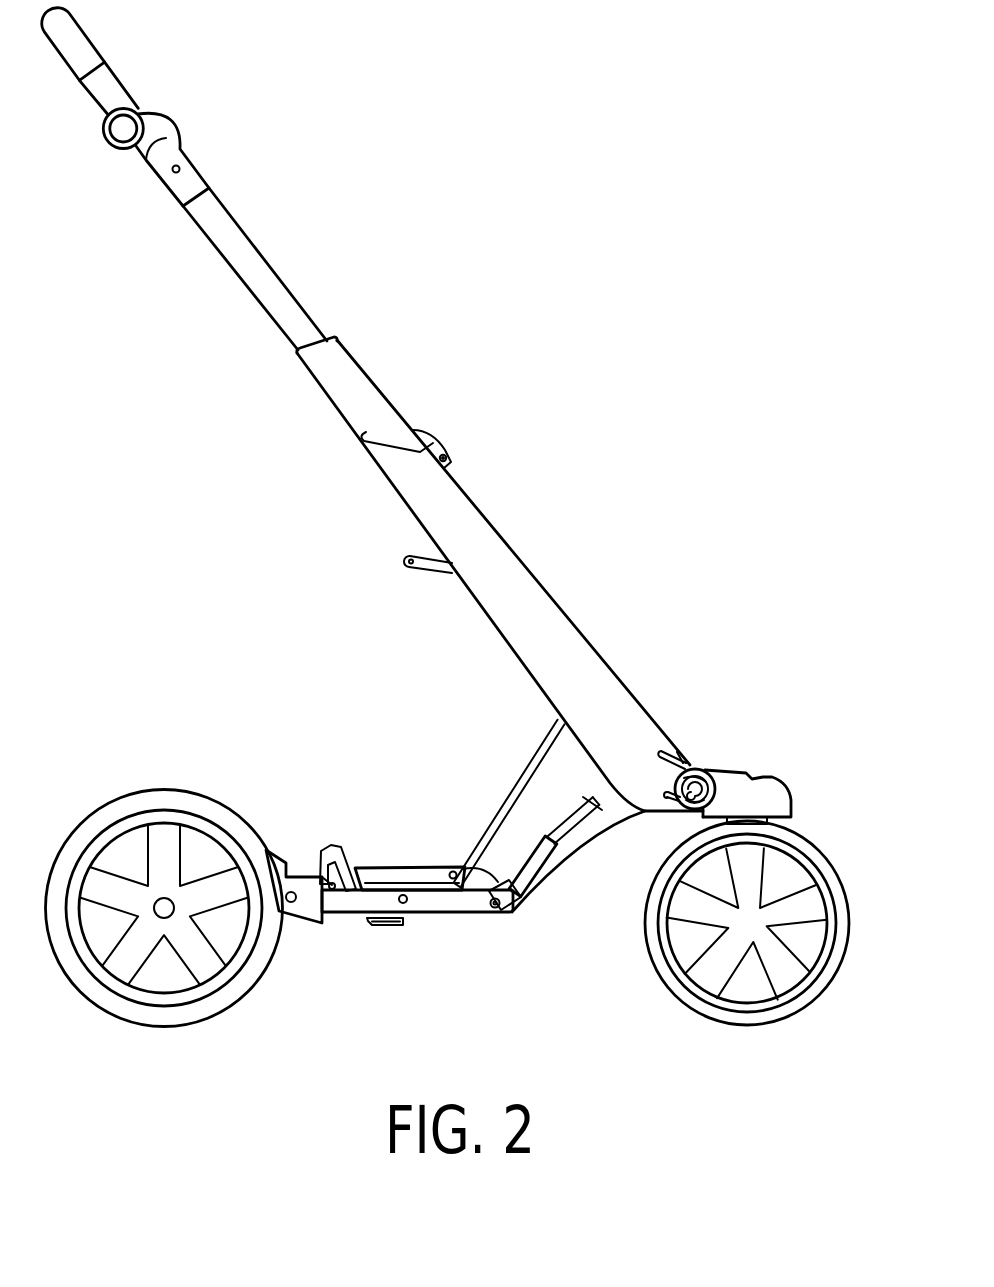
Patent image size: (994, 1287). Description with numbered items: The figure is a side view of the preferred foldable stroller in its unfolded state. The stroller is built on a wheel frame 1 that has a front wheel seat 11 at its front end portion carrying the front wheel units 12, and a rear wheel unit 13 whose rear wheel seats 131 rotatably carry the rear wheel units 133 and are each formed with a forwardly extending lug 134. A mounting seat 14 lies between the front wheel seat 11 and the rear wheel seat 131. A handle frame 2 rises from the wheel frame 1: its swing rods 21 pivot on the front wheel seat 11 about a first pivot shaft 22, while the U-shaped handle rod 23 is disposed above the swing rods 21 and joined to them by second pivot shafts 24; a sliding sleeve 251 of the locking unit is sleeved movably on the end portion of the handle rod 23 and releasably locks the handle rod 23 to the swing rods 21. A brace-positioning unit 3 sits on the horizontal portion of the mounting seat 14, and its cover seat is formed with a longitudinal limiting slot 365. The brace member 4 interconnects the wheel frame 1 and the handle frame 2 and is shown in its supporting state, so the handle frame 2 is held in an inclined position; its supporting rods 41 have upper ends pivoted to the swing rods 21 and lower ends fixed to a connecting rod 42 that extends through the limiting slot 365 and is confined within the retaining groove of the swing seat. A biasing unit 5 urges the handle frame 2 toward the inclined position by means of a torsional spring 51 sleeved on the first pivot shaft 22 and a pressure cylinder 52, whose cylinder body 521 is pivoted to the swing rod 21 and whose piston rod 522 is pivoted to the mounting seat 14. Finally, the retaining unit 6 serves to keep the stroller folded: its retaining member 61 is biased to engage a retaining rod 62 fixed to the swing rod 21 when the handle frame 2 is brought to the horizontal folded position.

The wheel frame 1 is at (300, 956).
The front wheel seat 11 is at (752, 783).
The front wheel unit 12 is at (842, 932).
The rear wheel unit 13 is at (180, 783).
The rear wheel seat 131 is at (325, 922).
The rear wheel unit 133 is at (177, 1016).
The forwardly extending lug 134 is at (324, 882).
The mounting seat 14 is at (582, 849).
The handle frame 2 is at (486, 480).
The swing rod 21 is at (500, 570).
The first pivot shaft 22 is at (720, 765).
The handle rod 23 is at (236, 212).
The second pivot shaft 24 is at (447, 455).
The sliding sleeve 251 is at (192, 174).
The brace-positioning unit 3 is at (398, 866).
The limiting slot 365 is at (427, 891).
The brace member 4 is at (512, 783).
The supporting rod 41 is at (503, 818).
The connecting rod 42 is at (453, 896).
The biasing unit 5 is at (551, 856).
The torsional spring 51 is at (692, 740).
The pressure cylinder 52 is at (576, 787).
The cylinder body 521 is at (618, 812).
The piston rod 522 is at (523, 874).
The retaining unit 6 is at (325, 847).
The retaining member 61 is at (341, 850).
The retaining rod 62 is at (405, 558).